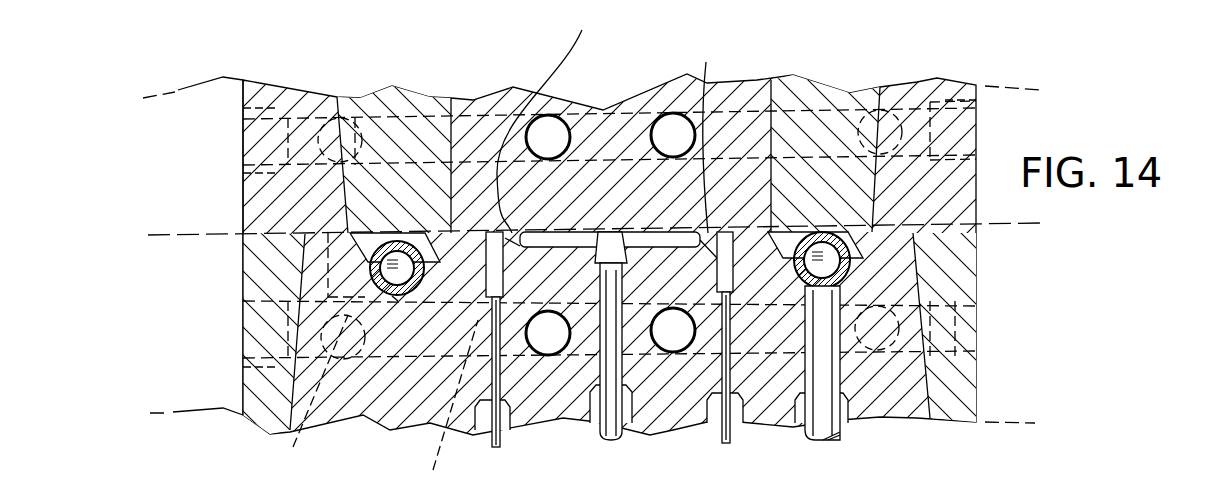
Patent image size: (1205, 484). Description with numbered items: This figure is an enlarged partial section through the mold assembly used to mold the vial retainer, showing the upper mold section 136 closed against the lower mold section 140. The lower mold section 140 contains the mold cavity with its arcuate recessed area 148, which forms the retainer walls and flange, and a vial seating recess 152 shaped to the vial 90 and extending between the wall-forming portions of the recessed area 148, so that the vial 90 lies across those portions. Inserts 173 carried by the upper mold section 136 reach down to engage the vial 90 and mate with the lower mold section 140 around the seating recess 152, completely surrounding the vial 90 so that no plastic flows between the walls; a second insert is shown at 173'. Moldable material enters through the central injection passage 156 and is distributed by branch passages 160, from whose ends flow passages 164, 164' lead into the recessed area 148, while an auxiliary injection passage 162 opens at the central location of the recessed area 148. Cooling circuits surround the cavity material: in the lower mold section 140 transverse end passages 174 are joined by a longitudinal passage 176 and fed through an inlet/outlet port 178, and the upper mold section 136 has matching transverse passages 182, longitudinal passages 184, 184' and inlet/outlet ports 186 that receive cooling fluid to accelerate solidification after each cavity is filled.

The upper mold section 136 is at (977, 85).
The lower mold section 140 is at (243, 288).
The arcuate recessed area 148 is at (362, 244).
The vial seating recess 152 is at (400, 296).
The vial 90 is at (392, 296).
The central injection passage 156 is at (612, 362).
The branch passages 160 is at (645, 233).
The auxiliary injection passage 162 is at (490, 282).
The flow passage 164 is at (616, 119).
The cam surface (second) 164' is at (751, 358).
The insert 173 is at (610, 236).
The housing section (second) 173' is at (680, 434).
The transverse end passages 174 is at (437, 402).
The longitudinal passage 176 is at (549, 340).
The inlet/outlet port 178 is at (307, 393).
The transverse passages 182 is at (497, 108).
The longitudinal passages 184 is at (610, 103).
The lower rod 184' is at (880, 385).
The inlet/outlet ports 186 is at (322, 117).